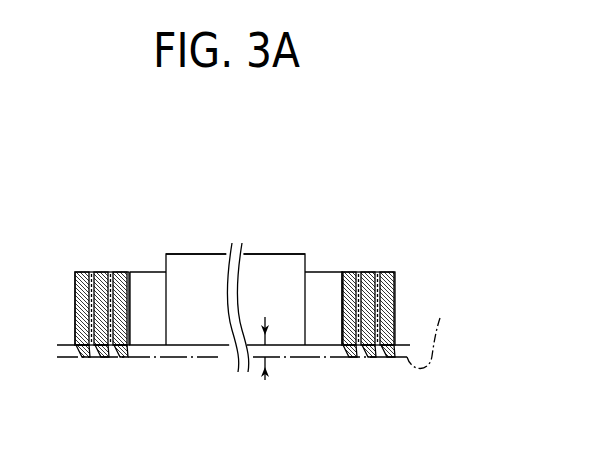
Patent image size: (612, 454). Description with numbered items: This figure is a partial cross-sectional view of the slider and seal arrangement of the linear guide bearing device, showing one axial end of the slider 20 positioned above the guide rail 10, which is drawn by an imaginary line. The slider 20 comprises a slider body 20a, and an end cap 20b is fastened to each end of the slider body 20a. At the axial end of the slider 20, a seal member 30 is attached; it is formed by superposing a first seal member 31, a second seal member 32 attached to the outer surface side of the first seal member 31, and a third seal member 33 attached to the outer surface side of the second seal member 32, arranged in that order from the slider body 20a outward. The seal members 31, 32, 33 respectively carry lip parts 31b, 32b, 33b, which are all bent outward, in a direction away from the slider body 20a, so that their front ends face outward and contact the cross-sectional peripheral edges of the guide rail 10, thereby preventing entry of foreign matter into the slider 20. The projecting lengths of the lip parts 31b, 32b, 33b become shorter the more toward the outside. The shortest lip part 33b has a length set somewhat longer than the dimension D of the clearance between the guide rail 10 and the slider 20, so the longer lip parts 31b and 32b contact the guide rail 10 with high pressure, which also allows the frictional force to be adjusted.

The guide rail 10 is at (262, 336).
The slider 20 is at (199, 206).
The slider body 20a is at (270, 262).
The end cap 20b is at (148, 280).
The seal member 30 is at (127, 163).
The first seal member 31 is at (120, 269).
The second seal member 32 is at (101, 269).
The third seal member 33 is at (82, 269).
The lip part 31b is at (120, 359).
The lip part 32b is at (102, 359).
The lip part 33b is at (84, 359).
The dimension of the clearance D is at (279, 344).